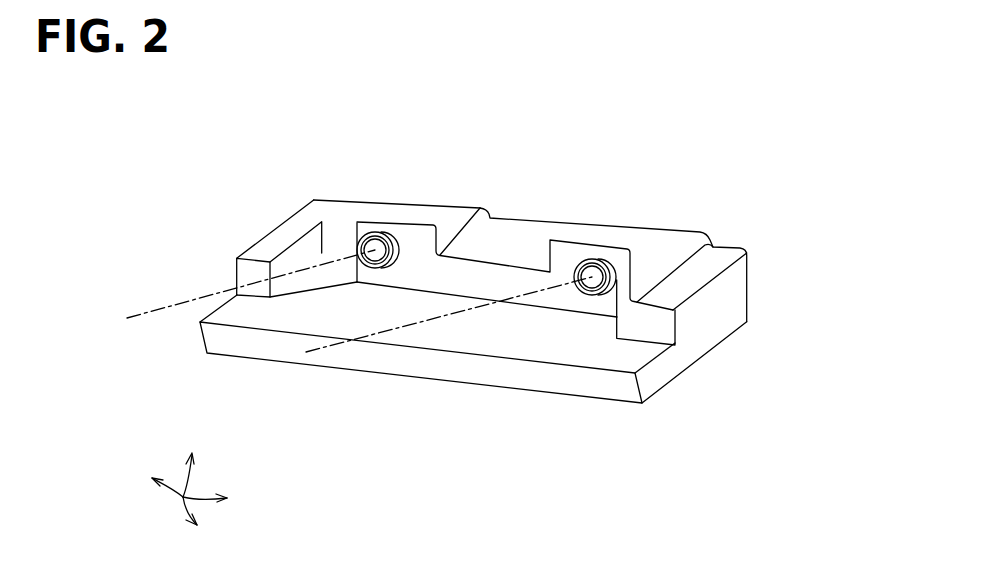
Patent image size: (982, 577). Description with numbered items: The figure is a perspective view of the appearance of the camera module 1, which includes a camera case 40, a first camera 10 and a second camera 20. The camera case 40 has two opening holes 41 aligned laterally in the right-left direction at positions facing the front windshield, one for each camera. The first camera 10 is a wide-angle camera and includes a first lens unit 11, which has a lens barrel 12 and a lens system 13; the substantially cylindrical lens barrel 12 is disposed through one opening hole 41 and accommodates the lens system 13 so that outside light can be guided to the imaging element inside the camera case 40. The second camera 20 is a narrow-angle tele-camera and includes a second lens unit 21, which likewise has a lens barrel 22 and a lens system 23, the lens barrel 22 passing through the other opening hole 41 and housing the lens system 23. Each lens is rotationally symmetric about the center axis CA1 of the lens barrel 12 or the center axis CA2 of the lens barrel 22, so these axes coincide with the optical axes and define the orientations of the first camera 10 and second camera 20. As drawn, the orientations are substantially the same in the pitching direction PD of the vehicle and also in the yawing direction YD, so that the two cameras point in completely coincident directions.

The camera module 1 is at (239, 131).
The first camera 10 is at (279, 248).
The first lens unit 11 is at (324, 248).
The lens barrel 12 is at (319, 220).
The lens system 13 is at (375, 250).
The second camera 20 is at (736, 328).
The second lens unit 21 is at (690, 327).
The lens barrel 22 is at (617, 277).
The lens system 23 is at (595, 287).
The camera case 40 is at (748, 282).
The opening holes 41 is at (375, 250).
The center axis CA1 is at (127, 318).
The center axis CA2 is at (306, 352).
The yawing direction YD is at (173, 493).
The pitching direction PD is at (183, 508).